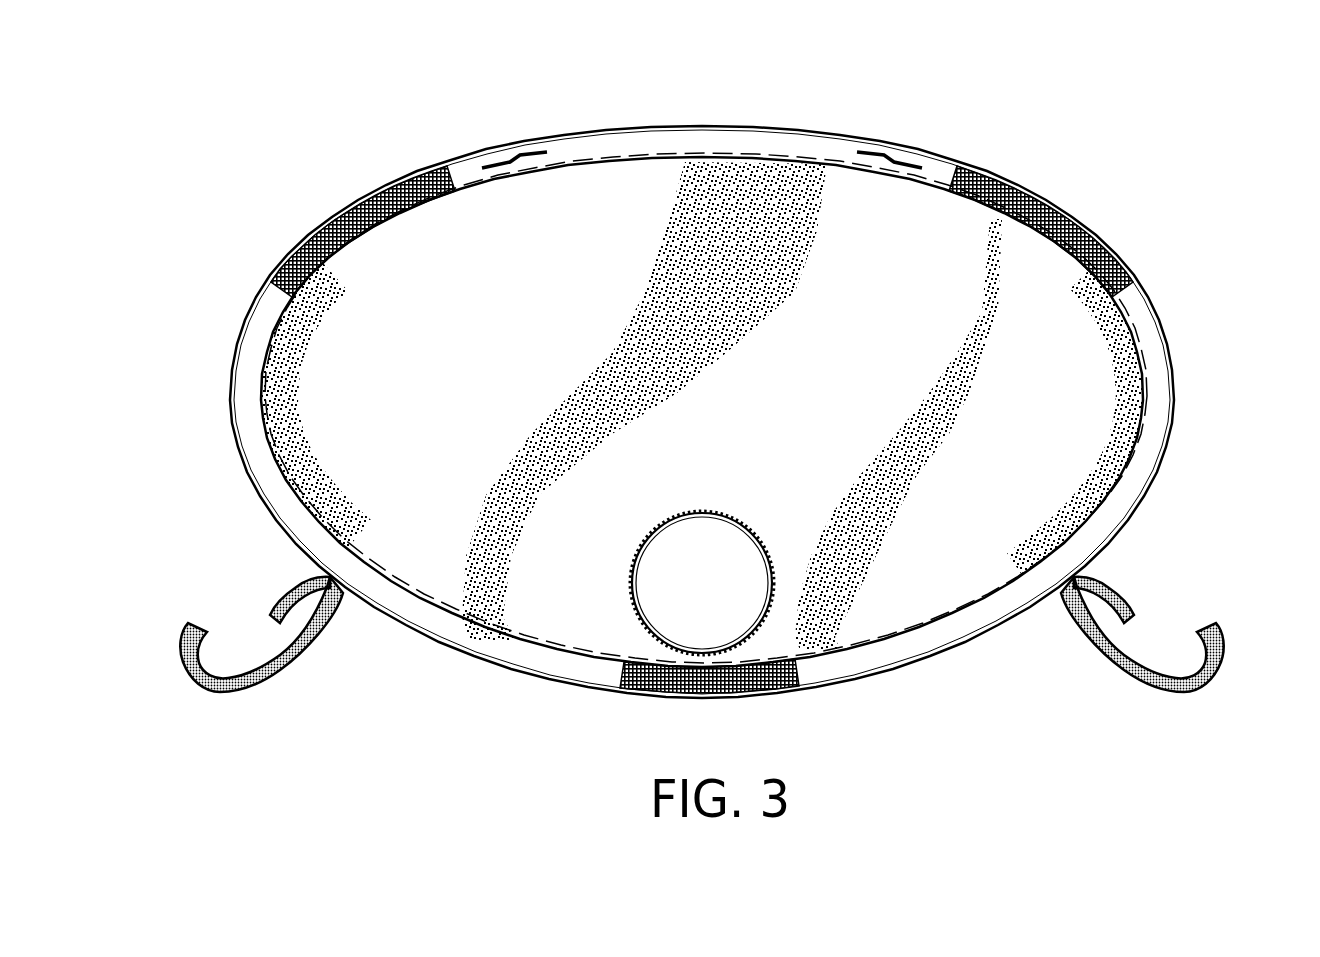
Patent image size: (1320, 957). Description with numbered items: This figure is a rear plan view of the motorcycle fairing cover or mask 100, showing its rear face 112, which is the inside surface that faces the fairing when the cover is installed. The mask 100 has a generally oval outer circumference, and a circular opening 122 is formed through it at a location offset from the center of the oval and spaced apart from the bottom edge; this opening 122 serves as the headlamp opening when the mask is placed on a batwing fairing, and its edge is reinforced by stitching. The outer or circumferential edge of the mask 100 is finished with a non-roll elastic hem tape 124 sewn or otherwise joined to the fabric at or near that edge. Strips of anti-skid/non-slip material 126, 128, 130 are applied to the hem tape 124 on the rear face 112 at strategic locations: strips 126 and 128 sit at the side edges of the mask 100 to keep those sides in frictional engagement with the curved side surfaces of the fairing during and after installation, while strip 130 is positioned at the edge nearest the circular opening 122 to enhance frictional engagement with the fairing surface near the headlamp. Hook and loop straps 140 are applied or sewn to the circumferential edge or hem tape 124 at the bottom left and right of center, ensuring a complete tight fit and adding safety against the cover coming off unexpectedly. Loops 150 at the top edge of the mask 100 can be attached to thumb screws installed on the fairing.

The mask 100 is at (1193, 163).
The rear face 112 is at (1078, 375).
The circular opening 122 is at (668, 640).
The non-roll elastic hem tape 124 is at (258, 453).
The strip of anti-skid/non-slip material 126 is at (334, 226).
The strip of anti-skid/non-slip material 128 is at (1036, 208).
The strip of anti-skid/non-slip material 130 is at (747, 693).
The hook and loop straps 140 is at (267, 673).
The loops 150 is at (512, 160).